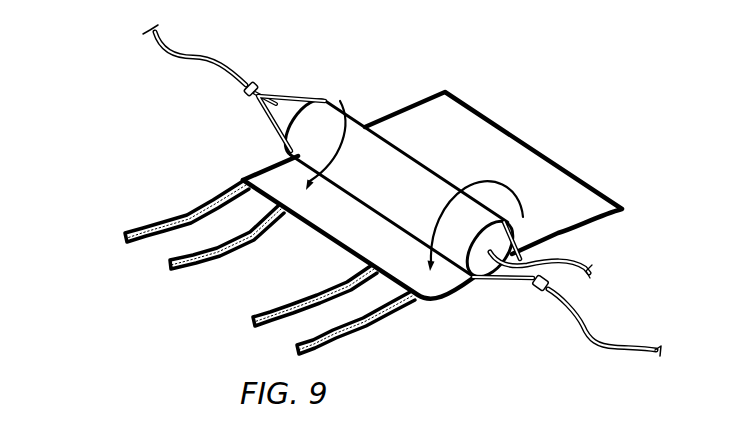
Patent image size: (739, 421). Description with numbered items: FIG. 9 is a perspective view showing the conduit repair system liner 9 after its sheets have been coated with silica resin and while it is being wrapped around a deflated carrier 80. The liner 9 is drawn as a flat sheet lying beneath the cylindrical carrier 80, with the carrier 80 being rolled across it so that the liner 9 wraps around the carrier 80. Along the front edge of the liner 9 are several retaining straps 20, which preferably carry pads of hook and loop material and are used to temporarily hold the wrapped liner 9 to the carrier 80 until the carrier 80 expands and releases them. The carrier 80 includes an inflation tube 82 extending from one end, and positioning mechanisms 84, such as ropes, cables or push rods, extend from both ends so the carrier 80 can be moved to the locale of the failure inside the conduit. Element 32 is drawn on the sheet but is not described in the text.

The conduit repair system liner 9 is at (519, 92).
The retaining strap 20 is at (122, 238).
The base sheet 32 is at (472, 163).
The carrier 80 is at (400, 194).
The inflation tube 82 is at (578, 262).
The positioning mechanism 84 is at (215, 57).